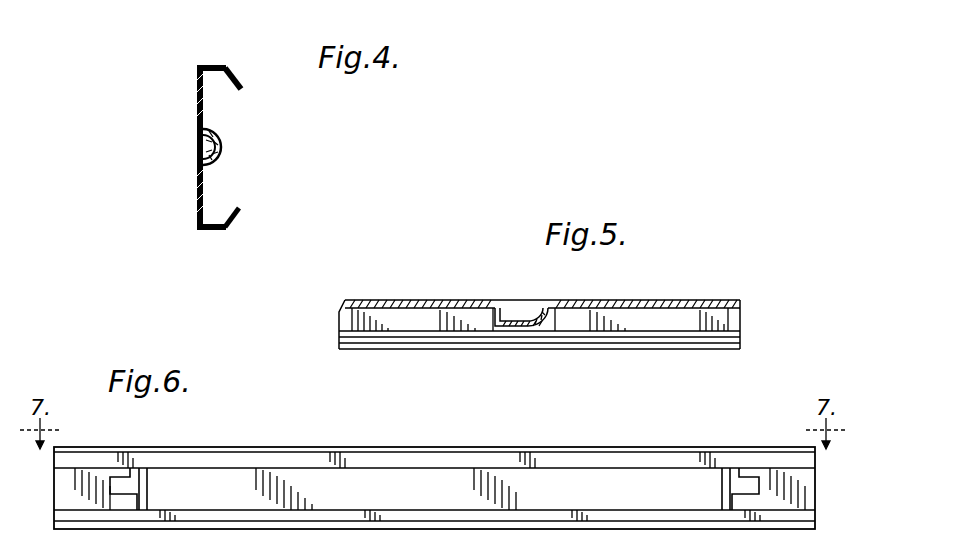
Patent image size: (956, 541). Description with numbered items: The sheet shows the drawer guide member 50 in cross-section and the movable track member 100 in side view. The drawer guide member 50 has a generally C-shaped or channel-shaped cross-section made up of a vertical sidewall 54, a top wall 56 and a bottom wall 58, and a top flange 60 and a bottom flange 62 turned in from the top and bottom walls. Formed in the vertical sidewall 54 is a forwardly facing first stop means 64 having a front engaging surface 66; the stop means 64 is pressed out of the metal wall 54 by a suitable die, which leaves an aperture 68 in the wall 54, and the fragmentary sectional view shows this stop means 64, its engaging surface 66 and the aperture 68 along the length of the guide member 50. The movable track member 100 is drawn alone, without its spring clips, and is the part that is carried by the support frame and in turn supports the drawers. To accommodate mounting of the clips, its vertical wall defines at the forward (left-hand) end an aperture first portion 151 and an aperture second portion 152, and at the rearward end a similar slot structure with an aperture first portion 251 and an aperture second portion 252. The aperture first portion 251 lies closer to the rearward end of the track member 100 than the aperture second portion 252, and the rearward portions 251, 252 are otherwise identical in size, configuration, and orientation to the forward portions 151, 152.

In FIG. 4, the drawer guide member 50 is at (215, 146).
In FIG. 5, the drawer guide member 50 is at (539, 324).
In FIG. 4, the vertical sidewall 54 is at (206, 190).
In FIG. 4, the top wall 56 is at (222, 66).
In FIG. 4, the bottom wall 58 is at (214, 234).
In FIG. 4, the top flange 60 is at (243, 80).
In FIG. 4, the bottom flange 62 is at (240, 214).
In FIG. 4, the first stop means 64 is at (221, 156).
In FIG. 5, the first stop means 64 is at (547, 322).
In FIG. 4, the front engaging surface 66 is at (226, 134).
In FIG. 5, the front engaging surface 66 is at (497, 323).
In FIG. 5, the aperture 68 is at (513, 324).
In FIG. 6, the movable track member 100 is at (434, 470).
In FIG. 6, the aperture first portion 151 is at (133, 466).
In FIG. 6, the aperture second portion 152 is at (171, 465).
In FIG. 6, the aperture first portion 251 is at (738, 466).
In FIG. 6, the aperture second portion 252 is at (695, 465).